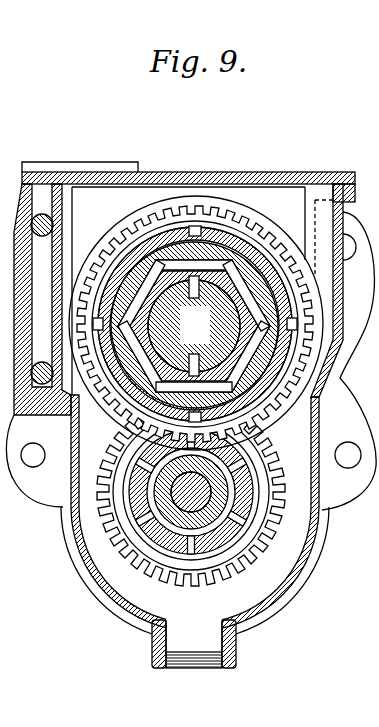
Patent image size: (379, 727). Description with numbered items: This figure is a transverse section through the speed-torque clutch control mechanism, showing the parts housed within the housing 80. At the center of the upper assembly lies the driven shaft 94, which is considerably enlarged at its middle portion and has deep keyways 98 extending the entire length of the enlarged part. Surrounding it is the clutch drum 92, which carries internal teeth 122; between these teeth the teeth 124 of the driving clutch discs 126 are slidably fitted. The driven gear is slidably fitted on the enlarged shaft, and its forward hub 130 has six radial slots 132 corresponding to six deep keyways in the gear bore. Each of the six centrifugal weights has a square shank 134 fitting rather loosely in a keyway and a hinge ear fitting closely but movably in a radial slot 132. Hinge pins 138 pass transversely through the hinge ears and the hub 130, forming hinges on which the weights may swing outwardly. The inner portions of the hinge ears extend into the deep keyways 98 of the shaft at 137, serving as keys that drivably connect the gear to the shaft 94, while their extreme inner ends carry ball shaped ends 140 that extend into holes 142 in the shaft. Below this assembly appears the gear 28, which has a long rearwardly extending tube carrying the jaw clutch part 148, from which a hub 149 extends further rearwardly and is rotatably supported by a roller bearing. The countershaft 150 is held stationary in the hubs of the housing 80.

The gear 28 is at (275, 470).
The housing 80 is at (318, 518).
The clutch drum 92 is at (238, 238).
The driven shaft 94 is at (256, 246).
The deep keyways 98 is at (253, 273).
The internal teeth 122 is at (222, 219).
The teeth 124 is at (128, 237).
The driving clutch discs 126 is at (113, 250).
The forward hub 130 is at (161, 254).
The radial slots 132 is at (123, 277).
The square shank 134 is at (116, 293).
The key portions 137 is at (194, 391).
The hinge pins 138 is at (112, 414).
The ball shaped ends 140 is at (211, 314).
The holes 142 is at (194, 326).
The jaw clutch part 148 is at (280, 514).
The hub 149 is at (167, 488).
The countershaft 150 is at (248, 500).